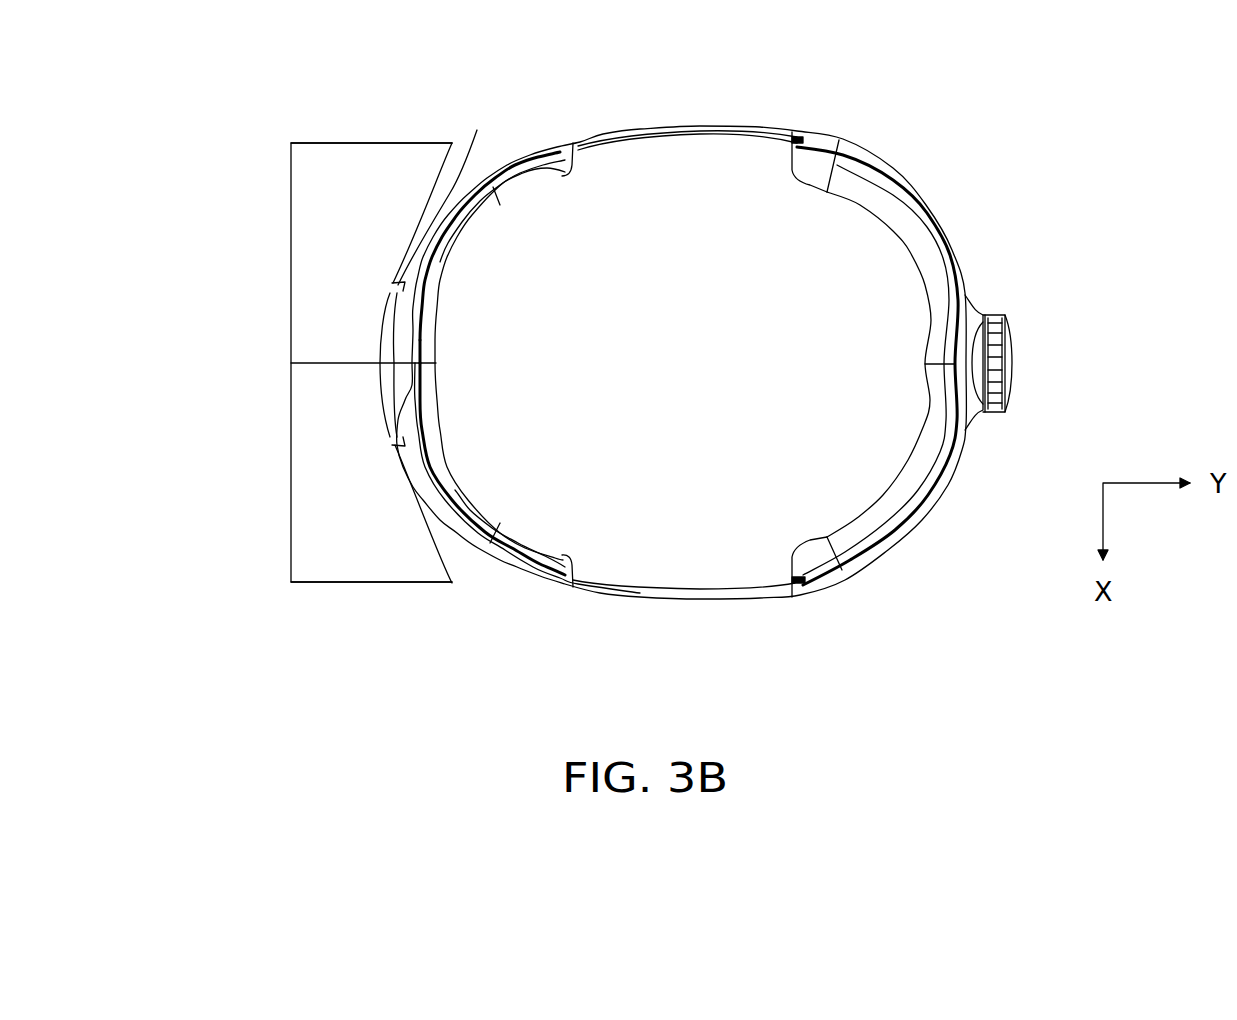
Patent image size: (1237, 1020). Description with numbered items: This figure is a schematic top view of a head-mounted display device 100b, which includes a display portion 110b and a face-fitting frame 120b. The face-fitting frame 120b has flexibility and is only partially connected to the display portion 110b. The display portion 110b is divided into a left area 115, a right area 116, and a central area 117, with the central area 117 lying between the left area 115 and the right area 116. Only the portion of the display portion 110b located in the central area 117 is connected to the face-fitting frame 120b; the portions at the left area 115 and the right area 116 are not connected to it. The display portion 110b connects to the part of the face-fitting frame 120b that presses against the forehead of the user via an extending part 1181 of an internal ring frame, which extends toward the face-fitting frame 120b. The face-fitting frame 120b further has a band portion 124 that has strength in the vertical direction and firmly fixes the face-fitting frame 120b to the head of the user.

The head-mounted display device 100b is at (1064, 689).
The display portion 110b is at (315, 268).
The left area 115 is at (361, 583).
The right area 116 is at (322, 144).
The central area 117 is at (291, 363).
The extending part 1181 is at (477, 130).
The face-fitting frame 120b is at (497, 557).
The band portion 124 is at (704, 594).